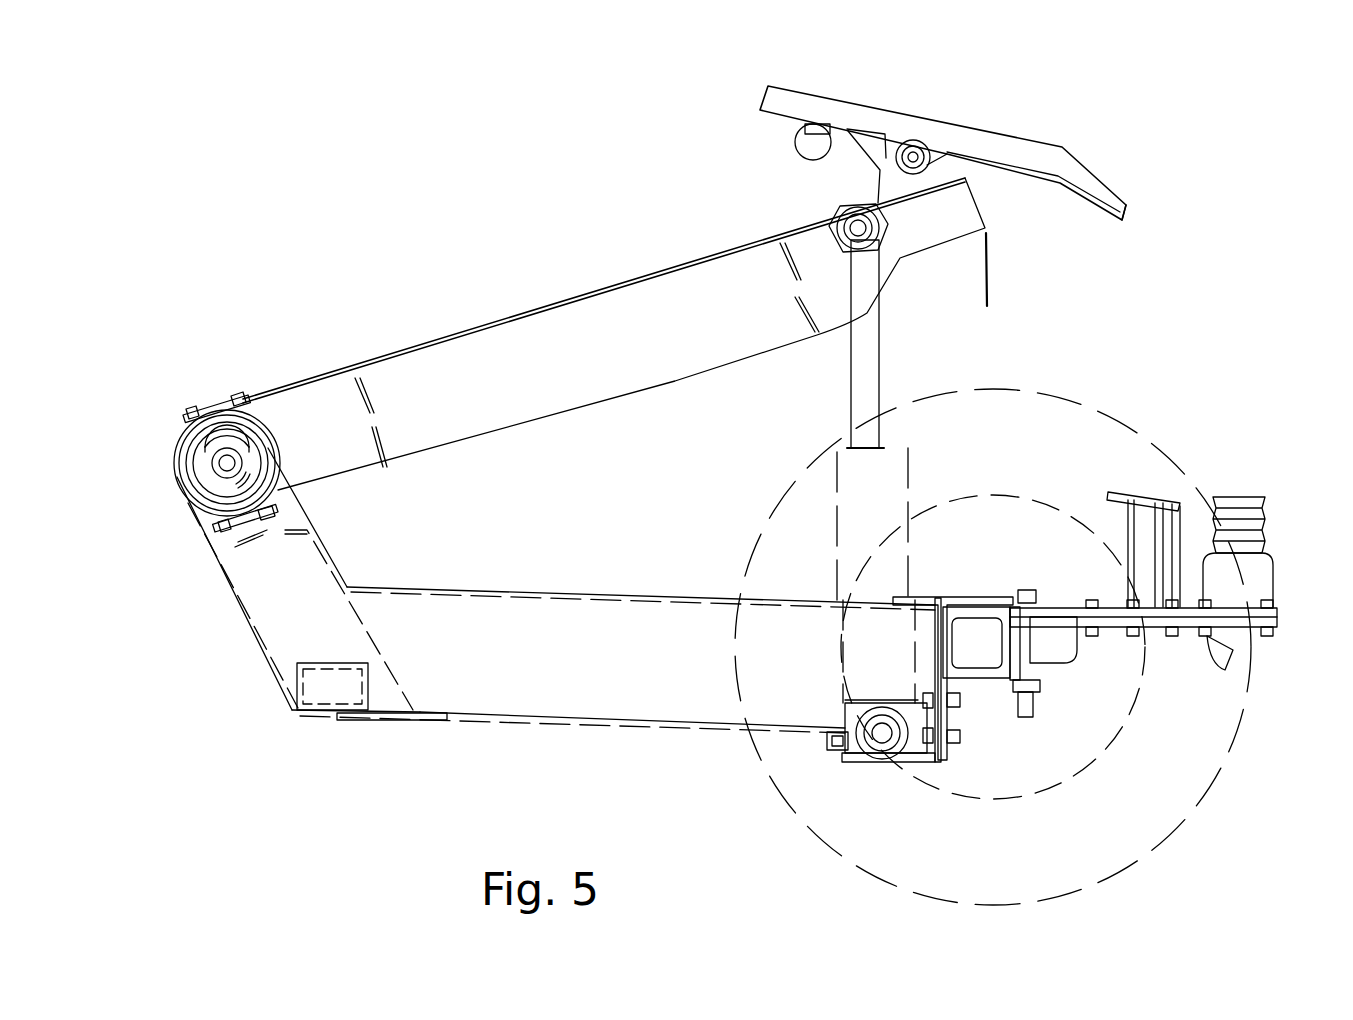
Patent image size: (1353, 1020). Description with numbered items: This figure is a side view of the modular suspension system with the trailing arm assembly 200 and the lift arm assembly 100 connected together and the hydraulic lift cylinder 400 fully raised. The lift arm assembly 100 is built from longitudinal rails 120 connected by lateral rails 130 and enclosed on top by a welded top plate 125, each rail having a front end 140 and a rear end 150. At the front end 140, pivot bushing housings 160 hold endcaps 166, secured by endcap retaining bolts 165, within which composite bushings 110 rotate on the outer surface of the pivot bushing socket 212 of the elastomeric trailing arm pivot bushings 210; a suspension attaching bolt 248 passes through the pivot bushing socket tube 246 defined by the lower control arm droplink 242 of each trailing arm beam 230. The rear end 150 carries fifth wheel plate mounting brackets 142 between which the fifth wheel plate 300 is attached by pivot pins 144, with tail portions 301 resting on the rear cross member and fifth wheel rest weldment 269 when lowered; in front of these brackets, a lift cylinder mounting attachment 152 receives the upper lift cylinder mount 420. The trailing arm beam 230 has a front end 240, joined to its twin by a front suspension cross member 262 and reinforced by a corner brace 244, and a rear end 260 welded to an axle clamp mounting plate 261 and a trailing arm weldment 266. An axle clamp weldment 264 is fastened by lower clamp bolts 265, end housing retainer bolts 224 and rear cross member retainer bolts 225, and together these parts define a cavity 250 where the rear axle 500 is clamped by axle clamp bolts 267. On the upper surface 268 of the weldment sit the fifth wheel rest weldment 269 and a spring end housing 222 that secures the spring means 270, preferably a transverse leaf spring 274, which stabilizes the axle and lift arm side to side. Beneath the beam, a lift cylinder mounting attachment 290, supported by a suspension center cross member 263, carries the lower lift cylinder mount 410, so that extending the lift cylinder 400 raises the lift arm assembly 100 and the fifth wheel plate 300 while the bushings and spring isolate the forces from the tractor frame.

The lift arm assembly 100 is at (490, 366).
The composite bushings 110 is at (263, 484).
The longitudinal rails 120 is at (552, 328).
The welded top plate 125 is at (697, 263).
The lateral rails 130 is at (375, 427).
The front end 140 is at (184, 438).
The fifth wheel plate mounting brackets 142 is at (895, 188).
The pivot pins 144 is at (915, 156).
The rear end 150 is at (984, 284).
The lift cylinder mounting attachment 152 is at (830, 219).
The pivot bushing housings 160 is at (260, 427).
The endcap retaining bolts 165 is at (237, 397).
The endcaps 166 is at (180, 440).
The trailing arm assembly 200 is at (560, 675).
The elastomeric trailing arm pivot bushings 210 is at (203, 467).
The pivot bushing socket 212 is at (190, 458).
The end housings 222 is at (1253, 594).
The end housing retainer bolts 224 is at (1210, 636).
The rear cross member retainer bolts 225 is at (1092, 636).
The trailing arm beams 230 is at (568, 625).
The front end 240 is at (392, 625).
The lower control arm droplink 242 is at (283, 595).
The corner brace 244 is at (390, 720).
The pivot bushing socket tube 246 is at (200, 470).
The suspension attaching bolt 248 is at (226, 464).
The cavity 250 is at (977, 648).
The rear end 260 is at (917, 650).
The axle clamp mounting plate 261 is at (937, 640).
The front suspension cross member 262 is at (318, 698).
The suspension center cross member 263 is at (826, 748).
The axle clamp weldment 264 is at (1183, 728).
The lower clamp bolts 265 is at (957, 703).
The trailing arm weldment 266 is at (1057, 607).
The axle clamp bolts 267 is at (1045, 680).
The upper surface 268 is at (1073, 607).
The rear cross member and fifth wheel rest weldment 269 is at (1160, 496).
The spring means 270 is at (1257, 528).
The transverse leaf spring 274 is at (1263, 565).
The lift cylinder mounting attachment 290 is at (867, 748).
The fifth wheel plate 300 is at (1033, 153).
The tail portions 301 is at (1128, 211).
The lift cylinder 400 is at (870, 390).
The lower lift cylinder mount 410 is at (903, 722).
The upper lift cylinder mount 420 is at (873, 238).
The rear axle 500 is at (984, 677).